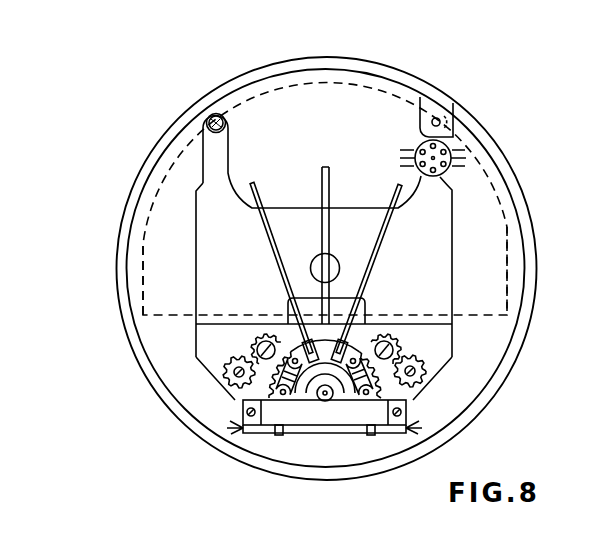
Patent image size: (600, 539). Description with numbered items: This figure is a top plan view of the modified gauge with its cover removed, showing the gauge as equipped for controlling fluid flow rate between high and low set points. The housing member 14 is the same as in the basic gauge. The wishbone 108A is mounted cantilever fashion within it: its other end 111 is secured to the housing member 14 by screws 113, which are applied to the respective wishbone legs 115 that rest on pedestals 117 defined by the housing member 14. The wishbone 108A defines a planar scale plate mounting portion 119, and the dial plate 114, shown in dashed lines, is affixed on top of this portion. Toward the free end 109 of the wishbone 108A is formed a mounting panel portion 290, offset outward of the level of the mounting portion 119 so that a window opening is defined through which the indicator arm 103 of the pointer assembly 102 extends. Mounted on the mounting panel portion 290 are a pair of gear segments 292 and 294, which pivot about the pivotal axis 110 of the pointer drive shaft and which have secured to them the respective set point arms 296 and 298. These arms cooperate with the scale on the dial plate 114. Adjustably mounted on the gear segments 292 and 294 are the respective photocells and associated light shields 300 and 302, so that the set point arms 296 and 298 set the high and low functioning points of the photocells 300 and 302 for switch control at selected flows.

The housing member 14 is at (413, 73).
The pedestals 117 is at (227, 110).
The screws 113 is at (223, 128).
The wishbone legs 115 is at (210, 160).
The dial plate 114 is at (132, 235).
The other end of wishbone 111 is at (455, 193).
The wishbone 108A is at (445, 227).
The planar scale plate mounting portion 119 is at (482, 258).
The mounting panel portion 290 is at (452, 345).
The free end 109 is at (437, 366).
The indicator arm 103 is at (330, 173).
The pointer assembly 102 is at (338, 203).
The set point arm 298 is at (278, 253).
The set point arm 296 is at (374, 262).
The gear segment 294 is at (293, 352).
The gear segment 292 is at (354, 352).
The photocell and associated light shield 302 is at (300, 403).
The pivotal axis 110 is at (324, 402).
The photocell and associated light shield 300 is at (350, 390).